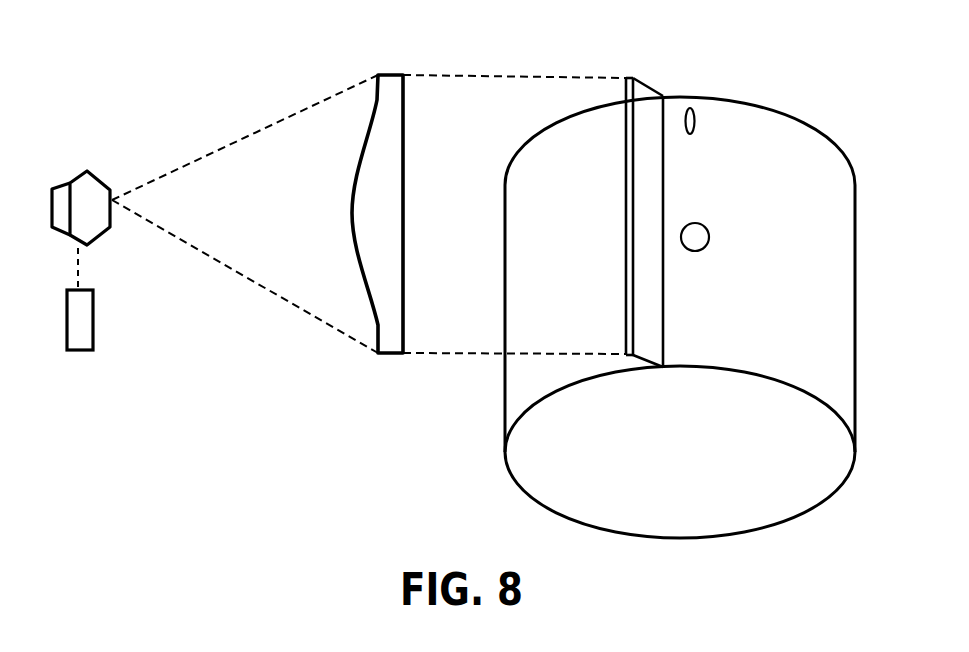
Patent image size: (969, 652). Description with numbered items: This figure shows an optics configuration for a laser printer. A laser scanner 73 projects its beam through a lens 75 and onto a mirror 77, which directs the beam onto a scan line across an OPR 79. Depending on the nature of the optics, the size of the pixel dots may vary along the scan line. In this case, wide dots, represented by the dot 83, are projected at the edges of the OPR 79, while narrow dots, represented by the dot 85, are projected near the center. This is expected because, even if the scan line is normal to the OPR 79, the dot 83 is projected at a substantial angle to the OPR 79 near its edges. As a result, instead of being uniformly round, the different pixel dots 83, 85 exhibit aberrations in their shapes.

The laser scanner 73 is at (56, 314).
The lens 75 is at (403, 233).
The mirror 77 is at (647, 83).
The OPR 79 is at (753, 316).
The dot 83 is at (702, 225).
The dot 85 is at (692, 108).